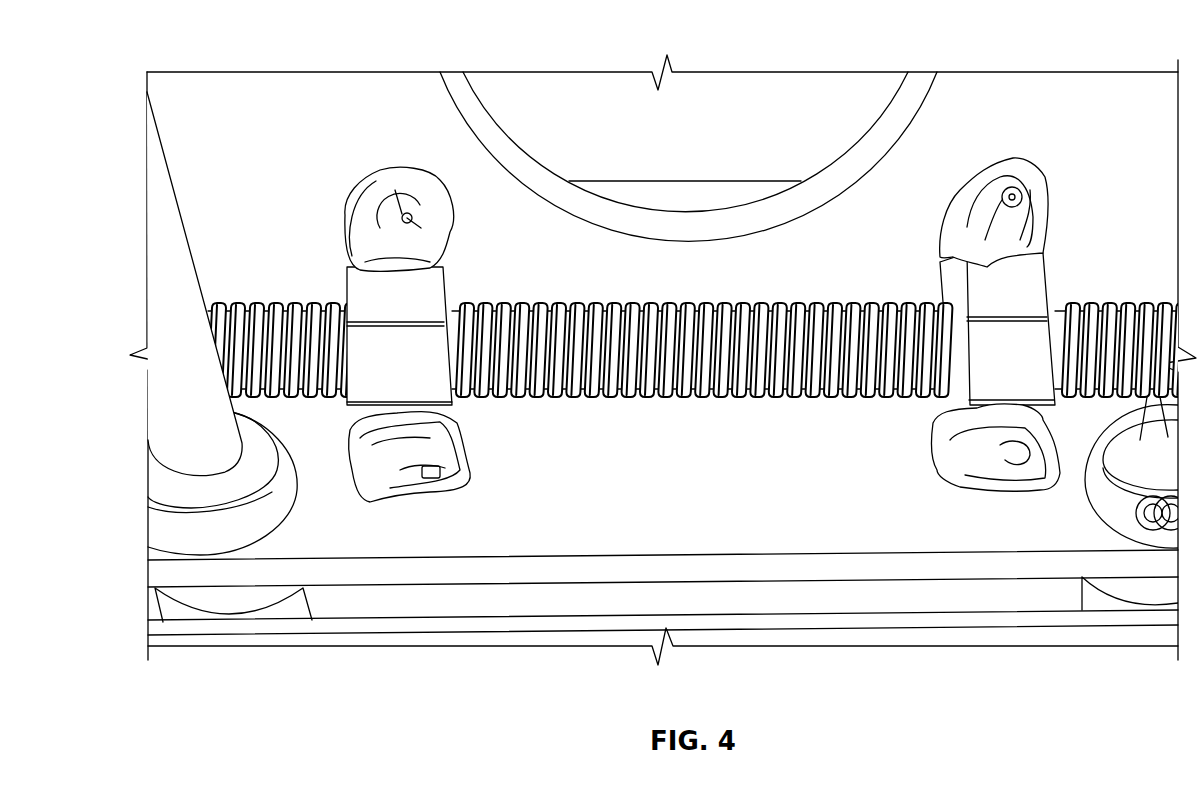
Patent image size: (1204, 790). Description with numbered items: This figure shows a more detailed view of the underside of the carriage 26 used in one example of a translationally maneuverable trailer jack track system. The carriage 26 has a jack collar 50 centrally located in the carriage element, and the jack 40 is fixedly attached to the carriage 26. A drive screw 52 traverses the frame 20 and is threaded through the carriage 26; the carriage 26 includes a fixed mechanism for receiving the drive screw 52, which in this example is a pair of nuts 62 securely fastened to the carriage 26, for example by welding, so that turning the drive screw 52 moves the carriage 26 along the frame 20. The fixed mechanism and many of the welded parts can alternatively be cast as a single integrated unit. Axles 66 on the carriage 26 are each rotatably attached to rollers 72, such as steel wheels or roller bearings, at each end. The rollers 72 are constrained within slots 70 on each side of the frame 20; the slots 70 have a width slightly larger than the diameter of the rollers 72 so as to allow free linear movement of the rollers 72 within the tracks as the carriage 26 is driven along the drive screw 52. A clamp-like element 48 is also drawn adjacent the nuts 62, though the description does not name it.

The frame 20 is at (540, 636).
The carriage 26 is at (399, 73).
The jack 40 is at (688, 241).
The clamp 48 is at (430, 480).
The jack collar 50 is at (601, 97).
The drive screw 52 is at (695, 383).
The nuts 62 is at (397, 353).
The axles 66 is at (163, 250).
The slots 70 is at (956, 594).
The rollers 72 is at (207, 603).